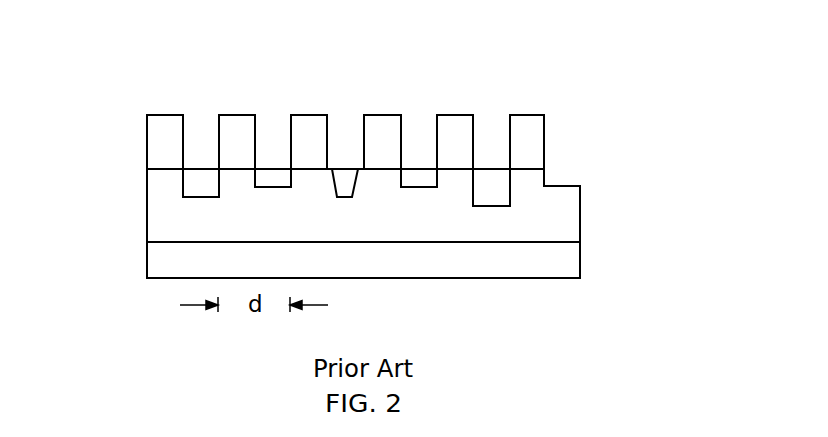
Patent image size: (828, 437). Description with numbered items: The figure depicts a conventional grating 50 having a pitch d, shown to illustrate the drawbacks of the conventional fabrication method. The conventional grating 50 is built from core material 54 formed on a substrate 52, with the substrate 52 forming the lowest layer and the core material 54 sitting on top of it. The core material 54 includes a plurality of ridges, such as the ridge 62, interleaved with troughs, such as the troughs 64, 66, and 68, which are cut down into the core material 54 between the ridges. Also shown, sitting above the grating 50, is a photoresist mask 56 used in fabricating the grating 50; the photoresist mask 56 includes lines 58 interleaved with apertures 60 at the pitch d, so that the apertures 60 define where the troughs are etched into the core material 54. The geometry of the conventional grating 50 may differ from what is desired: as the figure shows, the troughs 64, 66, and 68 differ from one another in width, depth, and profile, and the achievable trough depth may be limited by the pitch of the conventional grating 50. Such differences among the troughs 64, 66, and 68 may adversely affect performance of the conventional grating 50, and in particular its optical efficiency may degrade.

The conventional grating 50 is at (378, 17).
The substrate 52 is at (417, 278).
The core material 54 is at (147, 218).
The photoresist mask 56 is at (597, 133).
The lines 58 is at (165, 114).
The apertures 60 is at (202, 115).
The ridge 62 is at (128, 187).
The trough 64 is at (345, 168).
The trough 66 is at (418, 168).
The trough 68 is at (490, 168).